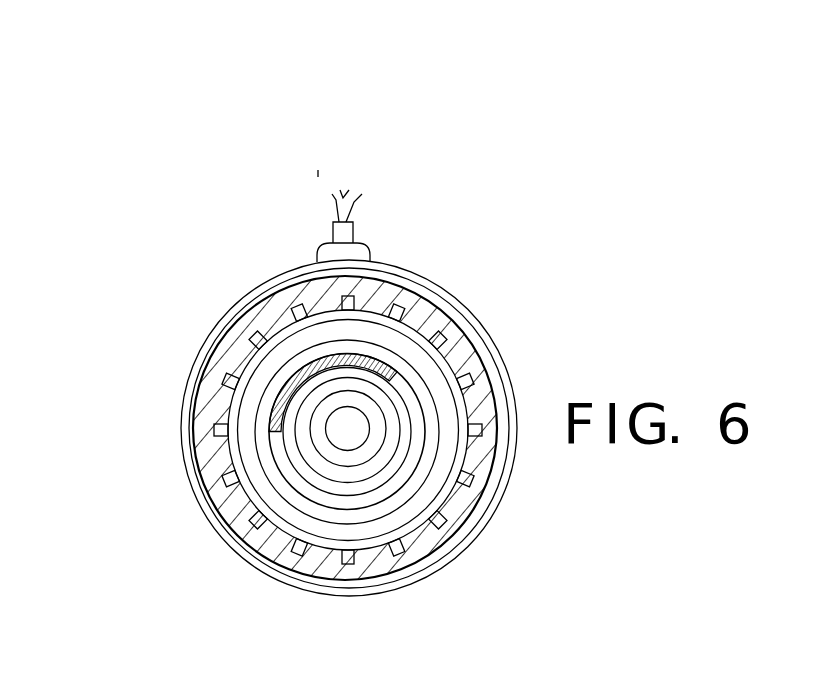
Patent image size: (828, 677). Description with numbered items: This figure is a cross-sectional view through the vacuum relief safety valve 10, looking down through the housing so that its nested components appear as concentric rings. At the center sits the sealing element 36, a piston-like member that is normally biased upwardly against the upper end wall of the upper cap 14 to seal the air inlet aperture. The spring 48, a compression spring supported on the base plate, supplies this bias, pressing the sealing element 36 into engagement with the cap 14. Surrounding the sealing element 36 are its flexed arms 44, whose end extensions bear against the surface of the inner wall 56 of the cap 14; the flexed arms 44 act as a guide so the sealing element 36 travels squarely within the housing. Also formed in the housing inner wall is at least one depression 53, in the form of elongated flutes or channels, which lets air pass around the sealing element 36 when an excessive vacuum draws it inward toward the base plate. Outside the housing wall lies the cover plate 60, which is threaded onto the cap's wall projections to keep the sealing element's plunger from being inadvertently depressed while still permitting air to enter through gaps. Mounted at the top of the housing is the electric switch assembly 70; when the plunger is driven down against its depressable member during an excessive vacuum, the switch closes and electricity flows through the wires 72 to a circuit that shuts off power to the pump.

The vacuum relief safety valve 10 is at (519, 270).
The upper cap 14 is at (258, 385).
The sealing element 36 is at (236, 350).
The arms 44 is at (235, 433).
The spring 48 is at (291, 370).
The depression 53 is at (297, 303).
The inner wall 56 is at (228, 396).
The cover plate 60 is at (427, 283).
The electric switch assembly 70 is at (370, 256).
The wires 72 is at (350, 178).